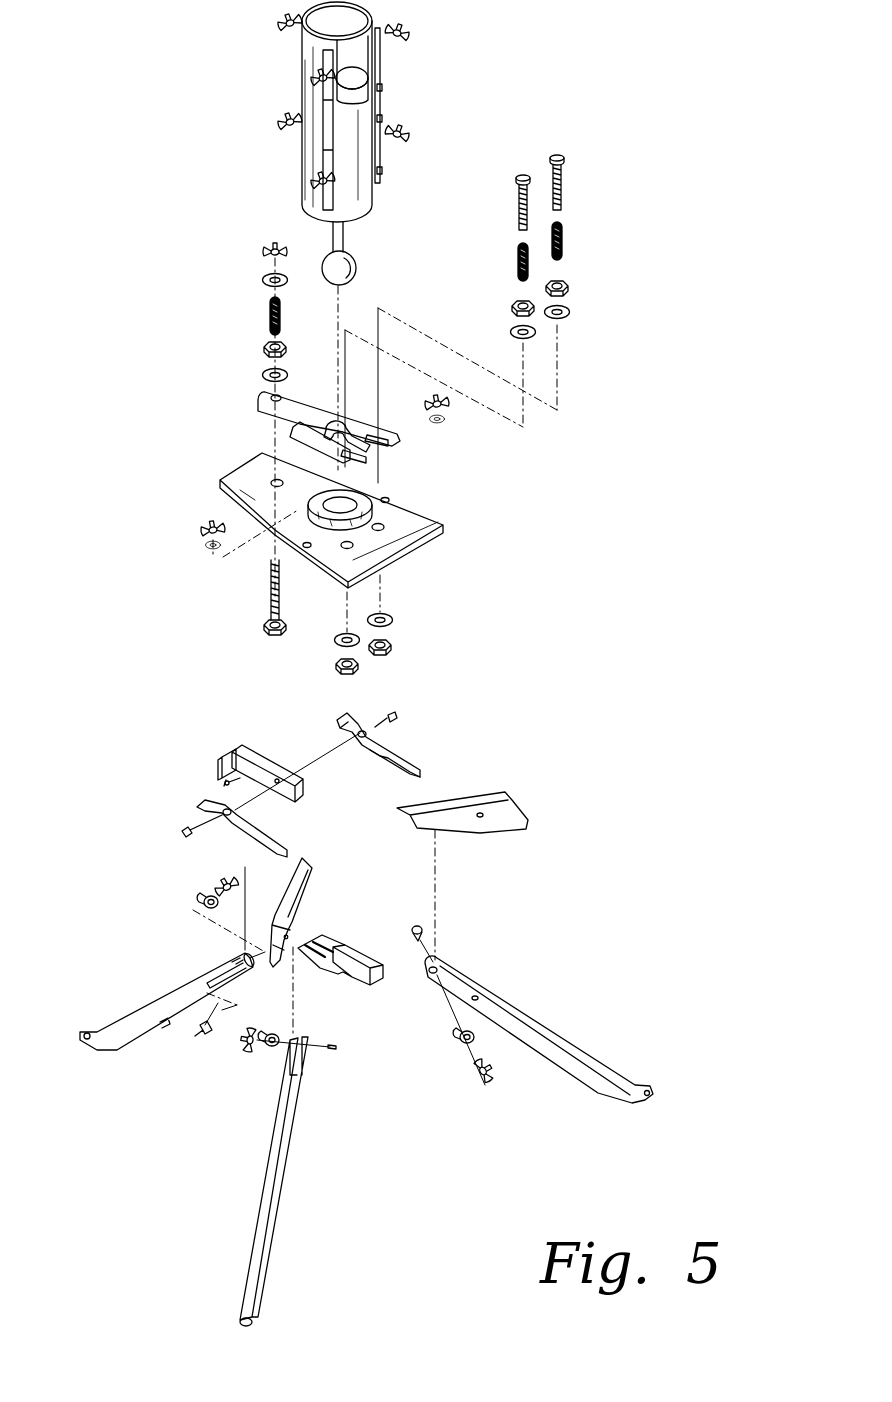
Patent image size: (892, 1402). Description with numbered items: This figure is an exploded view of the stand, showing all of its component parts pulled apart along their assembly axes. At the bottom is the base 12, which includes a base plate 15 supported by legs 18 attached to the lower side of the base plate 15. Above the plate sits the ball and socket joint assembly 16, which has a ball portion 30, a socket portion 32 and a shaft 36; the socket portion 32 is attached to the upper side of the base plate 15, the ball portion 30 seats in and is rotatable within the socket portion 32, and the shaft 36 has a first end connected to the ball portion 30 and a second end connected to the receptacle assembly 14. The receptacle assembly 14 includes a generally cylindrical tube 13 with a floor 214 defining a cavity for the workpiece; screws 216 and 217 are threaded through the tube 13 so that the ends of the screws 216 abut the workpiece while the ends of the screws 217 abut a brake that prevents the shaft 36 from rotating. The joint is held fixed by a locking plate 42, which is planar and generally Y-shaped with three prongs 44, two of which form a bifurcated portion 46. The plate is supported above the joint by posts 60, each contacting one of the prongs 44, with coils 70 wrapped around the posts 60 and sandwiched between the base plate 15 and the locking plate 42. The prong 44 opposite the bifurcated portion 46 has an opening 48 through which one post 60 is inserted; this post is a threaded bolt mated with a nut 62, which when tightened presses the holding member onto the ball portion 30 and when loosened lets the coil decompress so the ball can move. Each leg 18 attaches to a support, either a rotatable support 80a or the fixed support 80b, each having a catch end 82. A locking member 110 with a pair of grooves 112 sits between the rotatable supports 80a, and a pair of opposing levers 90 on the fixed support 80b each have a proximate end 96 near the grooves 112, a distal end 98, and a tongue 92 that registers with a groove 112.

The base 12 is at (135, 674).
The tube 13 is at (312, 62).
The receptacle assembly 14 is at (130, 130).
The base plate 15 is at (435, 540).
The ball and socket joint assembly 16 is at (242, 195).
The legs 18 is at (272, 1180).
The ball portion 30 is at (357, 262).
The socket portion 32 is at (360, 505).
The shaft 36 is at (348, 236).
The locking plate 42 is at (222, 392).
The prongs 44 is at (357, 422).
The bifurcated portion 46 is at (352, 446).
The opening 48 is at (262, 375).
The posts 60 is at (568, 186).
The nut 62 is at (265, 252).
The coils 70 is at (268, 320).
The rotatable support 80a is at (500, 784).
The fixed support 80b is at (270, 762).
The catch end 82 is at (222, 764).
The levers 90 is at (375, 743).
The tongue 92 is at (268, 832).
The proximate end 96 is at (415, 768).
The distal end 98 is at (348, 716).
The locking member 110 is at (350, 975).
The grooves 112 is at (325, 933).
The floor 214 is at (355, 72).
The screws 216 is at (402, 33).
The screws 217 is at (405, 136).